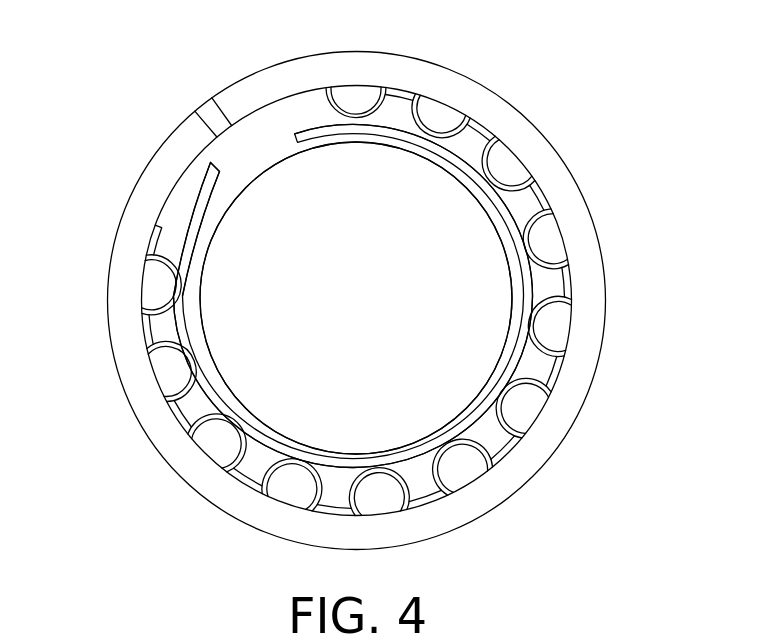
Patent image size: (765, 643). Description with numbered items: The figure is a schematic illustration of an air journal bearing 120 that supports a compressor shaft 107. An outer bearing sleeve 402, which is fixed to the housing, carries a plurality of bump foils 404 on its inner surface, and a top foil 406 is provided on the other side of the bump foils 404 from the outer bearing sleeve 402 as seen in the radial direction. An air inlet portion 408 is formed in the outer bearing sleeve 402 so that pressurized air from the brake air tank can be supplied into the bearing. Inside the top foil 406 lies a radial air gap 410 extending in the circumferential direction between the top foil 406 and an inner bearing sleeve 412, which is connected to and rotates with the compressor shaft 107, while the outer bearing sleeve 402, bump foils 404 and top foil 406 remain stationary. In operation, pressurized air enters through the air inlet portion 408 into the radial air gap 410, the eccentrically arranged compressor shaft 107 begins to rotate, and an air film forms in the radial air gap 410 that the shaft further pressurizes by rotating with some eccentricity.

The air journal bearing 120 is at (571, 78).
The outer bearing sleeve 402 is at (437, 77).
The bump foils 404 is at (530, 240).
The top foil 406 is at (530, 292).
The air inlet portion 408 is at (213, 117).
The radial air gap 410 is at (183, 272).
The inner bearing sleeve 412 is at (192, 293).
The compressor shaft 107 is at (458, 340).